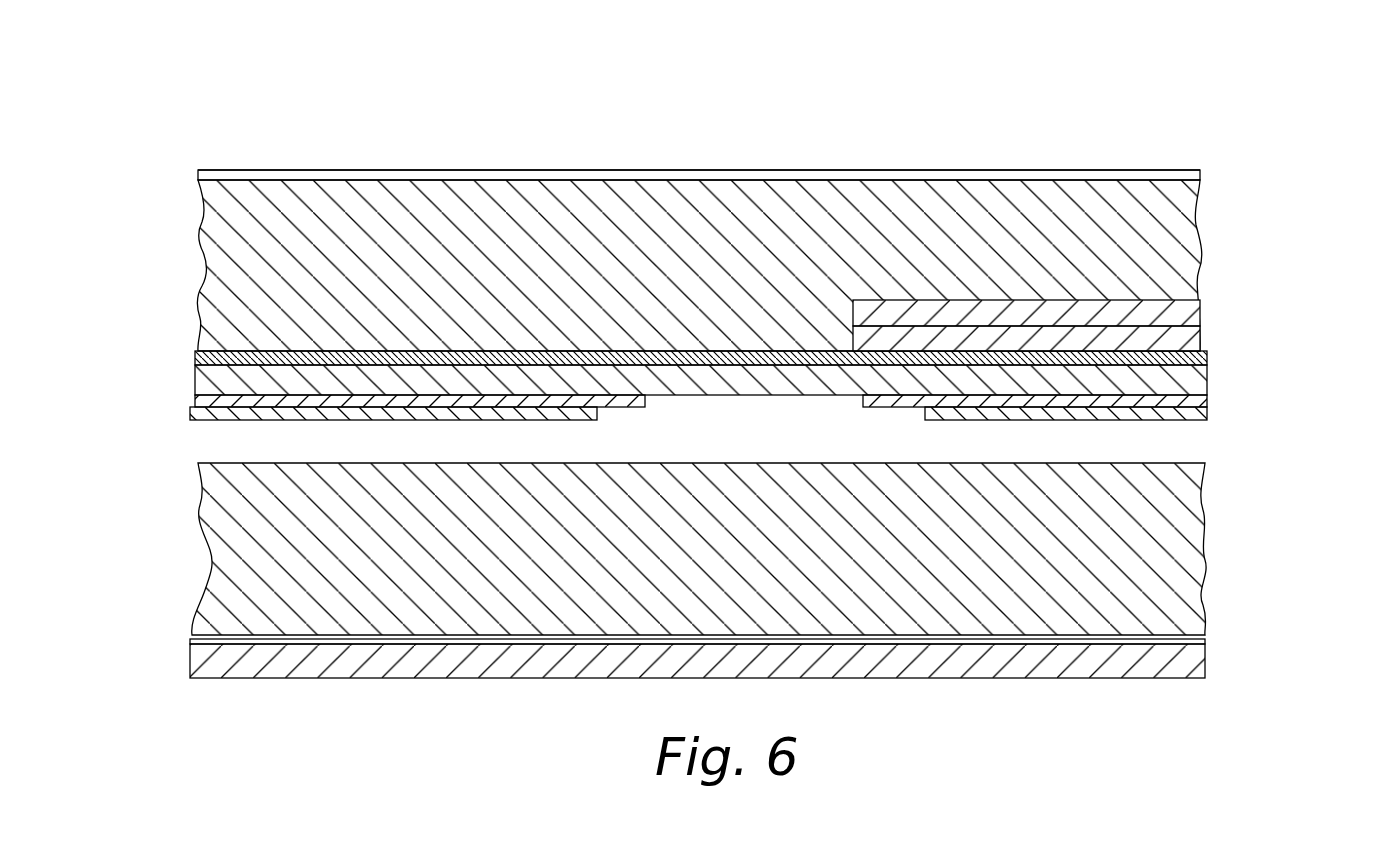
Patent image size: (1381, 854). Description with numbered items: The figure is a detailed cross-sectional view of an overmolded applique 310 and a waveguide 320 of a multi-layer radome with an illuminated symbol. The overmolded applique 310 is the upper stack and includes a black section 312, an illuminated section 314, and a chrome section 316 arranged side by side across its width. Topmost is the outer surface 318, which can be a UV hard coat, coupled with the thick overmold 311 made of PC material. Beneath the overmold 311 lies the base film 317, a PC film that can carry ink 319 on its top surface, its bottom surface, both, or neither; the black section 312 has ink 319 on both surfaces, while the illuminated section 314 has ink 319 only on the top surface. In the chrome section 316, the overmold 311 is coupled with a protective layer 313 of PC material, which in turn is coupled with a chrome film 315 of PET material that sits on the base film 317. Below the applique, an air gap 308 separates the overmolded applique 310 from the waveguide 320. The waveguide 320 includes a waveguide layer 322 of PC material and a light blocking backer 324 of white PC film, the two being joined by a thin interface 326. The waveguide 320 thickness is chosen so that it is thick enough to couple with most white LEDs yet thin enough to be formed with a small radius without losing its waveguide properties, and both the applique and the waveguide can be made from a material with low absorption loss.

The air gap 308 is at (1181, 447).
The overmolded applique 310 is at (702, 229).
The overmold 311 is at (1172, 245).
The black section 312 is at (413, 147).
The protective layer 313 is at (1200, 314).
The illuminated section 314 is at (748, 147).
The chrome film 315 is at (1205, 338).
The chrome section 316 is at (1045, 155).
The base film 317 is at (1207, 377).
The outer surface 318 is at (1200, 170).
The ink 319 is at (195, 400).
The waveguide 320 is at (699, 576).
The waveguide layer 322 is at (1183, 553).
The light blocking backer 324 is at (1180, 663).
The interface 326 is at (1185, 641).